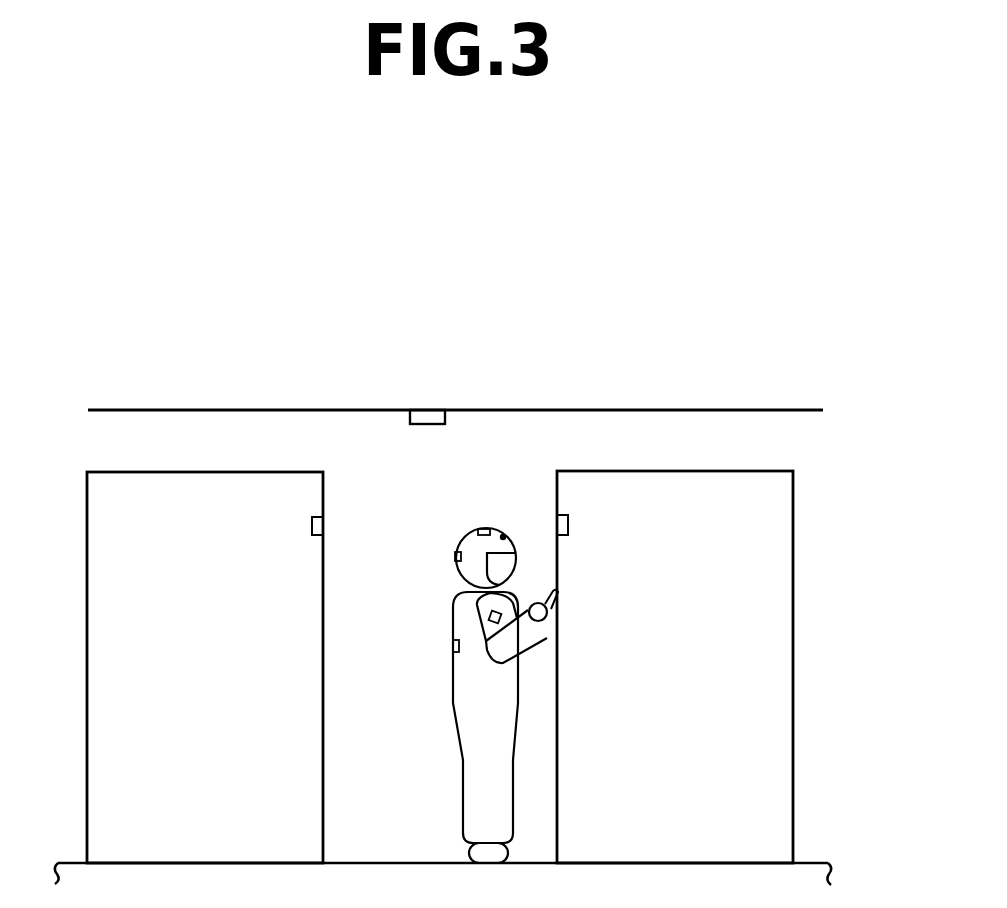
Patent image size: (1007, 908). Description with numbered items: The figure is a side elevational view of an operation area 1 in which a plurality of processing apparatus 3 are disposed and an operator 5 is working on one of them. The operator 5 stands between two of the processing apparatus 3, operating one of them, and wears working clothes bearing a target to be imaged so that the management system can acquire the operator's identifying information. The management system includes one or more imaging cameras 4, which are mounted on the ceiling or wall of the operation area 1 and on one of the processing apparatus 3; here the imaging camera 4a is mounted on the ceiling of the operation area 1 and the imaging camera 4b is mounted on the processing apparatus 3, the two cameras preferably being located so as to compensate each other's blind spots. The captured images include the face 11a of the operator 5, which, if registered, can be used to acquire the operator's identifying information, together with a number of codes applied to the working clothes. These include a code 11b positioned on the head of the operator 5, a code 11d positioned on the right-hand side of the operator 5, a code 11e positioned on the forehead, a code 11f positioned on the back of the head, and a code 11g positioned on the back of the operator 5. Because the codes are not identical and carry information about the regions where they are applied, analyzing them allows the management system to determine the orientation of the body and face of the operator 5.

The operation area 1 is at (92, 444).
The processing apparatus 3 is at (793, 638).
The imaging cameras 4 is at (543, 332).
The imaging camera 4a is at (466, 510).
The imaging camera 4b is at (530, 547).
The operator 5 is at (452, 703).
The face 11a is at (510, 566).
The code 11b is at (475, 527).
The code 11d is at (540, 638).
The code 11e is at (503, 537).
The code 11f is at (455, 554).
The code 11g is at (453, 647).